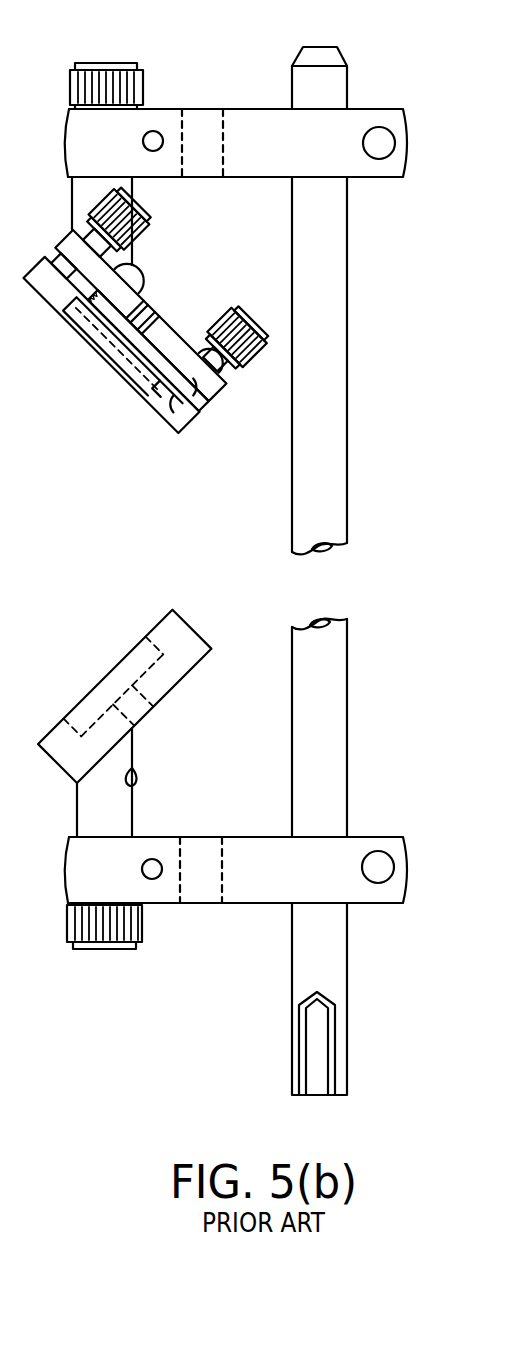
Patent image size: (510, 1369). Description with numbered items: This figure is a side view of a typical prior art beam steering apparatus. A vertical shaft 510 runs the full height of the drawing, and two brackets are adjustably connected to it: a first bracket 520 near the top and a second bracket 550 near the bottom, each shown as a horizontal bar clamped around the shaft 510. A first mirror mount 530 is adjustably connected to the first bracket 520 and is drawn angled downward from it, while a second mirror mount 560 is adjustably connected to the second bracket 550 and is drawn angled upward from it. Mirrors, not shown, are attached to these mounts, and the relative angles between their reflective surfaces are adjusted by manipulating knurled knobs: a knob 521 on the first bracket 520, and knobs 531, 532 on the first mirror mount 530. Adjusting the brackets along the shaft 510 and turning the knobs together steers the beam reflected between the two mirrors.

The shaft 510 is at (347, 492).
The first bracket 520 is at (265, 108).
The knob 521 is at (108, 62).
The first mirror mount 530 is at (162, 320).
The knob 531 is at (248, 314).
The knob 532 is at (150, 212).
The second bracket 550 is at (232, 905).
The second mirror mount 560 is at (175, 687).